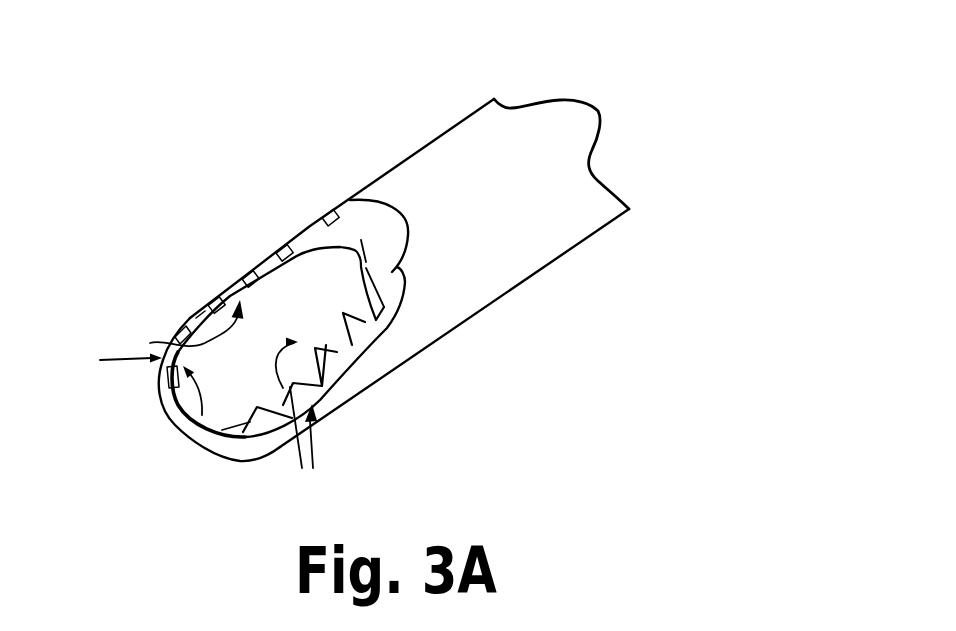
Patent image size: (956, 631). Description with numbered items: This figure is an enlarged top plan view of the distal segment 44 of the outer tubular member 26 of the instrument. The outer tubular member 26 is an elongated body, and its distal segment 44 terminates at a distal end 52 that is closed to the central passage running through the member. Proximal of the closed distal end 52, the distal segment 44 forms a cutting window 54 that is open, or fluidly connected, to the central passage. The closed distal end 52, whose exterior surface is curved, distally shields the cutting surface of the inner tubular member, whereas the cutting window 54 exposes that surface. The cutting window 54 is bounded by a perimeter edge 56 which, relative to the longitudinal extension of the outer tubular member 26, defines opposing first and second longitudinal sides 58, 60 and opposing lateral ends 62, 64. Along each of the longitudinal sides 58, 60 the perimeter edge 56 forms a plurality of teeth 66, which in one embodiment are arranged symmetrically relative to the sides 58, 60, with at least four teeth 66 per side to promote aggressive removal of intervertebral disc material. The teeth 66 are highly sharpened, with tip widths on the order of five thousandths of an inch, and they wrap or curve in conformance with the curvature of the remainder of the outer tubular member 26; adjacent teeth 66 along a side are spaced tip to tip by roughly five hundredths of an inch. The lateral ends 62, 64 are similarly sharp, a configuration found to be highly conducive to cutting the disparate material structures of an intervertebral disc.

The outer tubular member 26 is at (565, 40).
The distal segment 44 is at (521, 267).
The distal end 52 is at (233, 453).
The cutting window 54 is at (266, 297).
The perimeter edge 56 is at (187, 423).
The first longitudinal side 58 is at (208, 308).
The second longitudinal side 60 is at (320, 384).
The lateral end 62 is at (212, 413).
The lateral end 64 is at (361, 240).
The teeth 66 is at (150, 343).